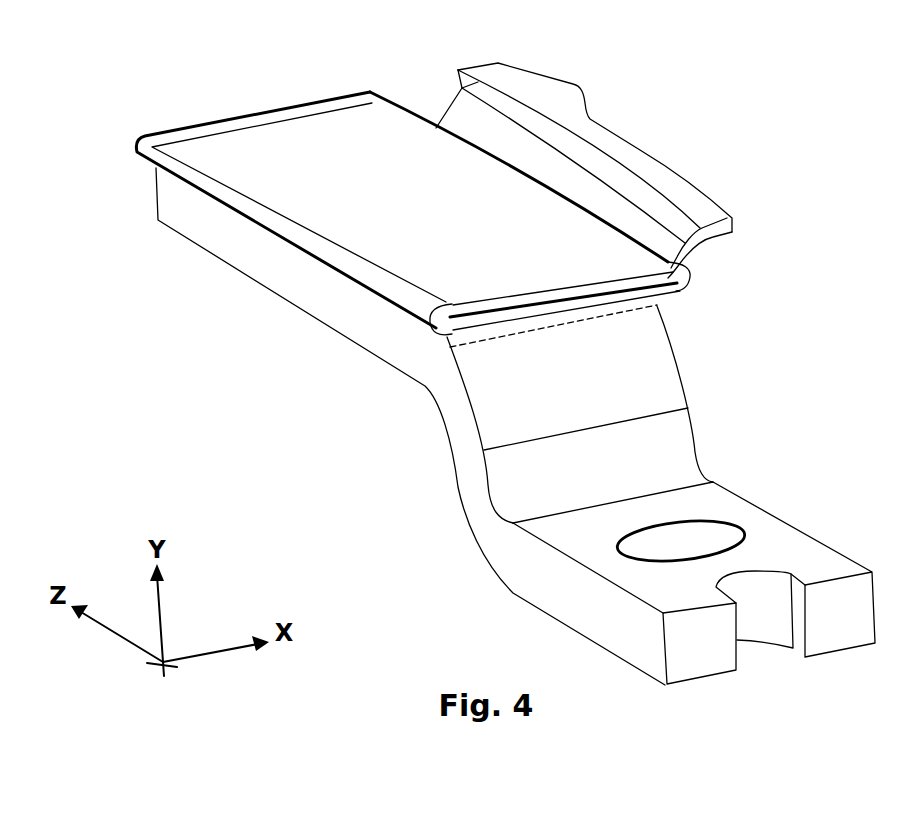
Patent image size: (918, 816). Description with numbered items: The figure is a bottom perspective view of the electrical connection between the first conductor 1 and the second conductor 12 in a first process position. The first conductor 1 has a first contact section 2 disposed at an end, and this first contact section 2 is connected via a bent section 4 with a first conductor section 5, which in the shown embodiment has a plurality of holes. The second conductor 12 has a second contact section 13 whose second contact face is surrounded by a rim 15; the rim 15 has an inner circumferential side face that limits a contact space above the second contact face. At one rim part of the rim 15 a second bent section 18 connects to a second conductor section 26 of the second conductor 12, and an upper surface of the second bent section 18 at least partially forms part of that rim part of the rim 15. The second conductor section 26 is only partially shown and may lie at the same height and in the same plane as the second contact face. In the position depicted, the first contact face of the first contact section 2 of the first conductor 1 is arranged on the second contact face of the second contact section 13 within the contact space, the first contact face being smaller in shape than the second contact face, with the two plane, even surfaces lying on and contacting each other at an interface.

The first conductor 1 is at (338, 492).
The first contact section 2 is at (293, 285).
The bent section 4 is at (475, 490).
The first conductor section 5 is at (580, 615).
The second conductor 12 is at (201, 68).
The second contact section 13 is at (248, 157).
The rim 15 is at (197, 126).
The second bent section 18 is at (685, 260).
The second conductor section 26 is at (635, 157).